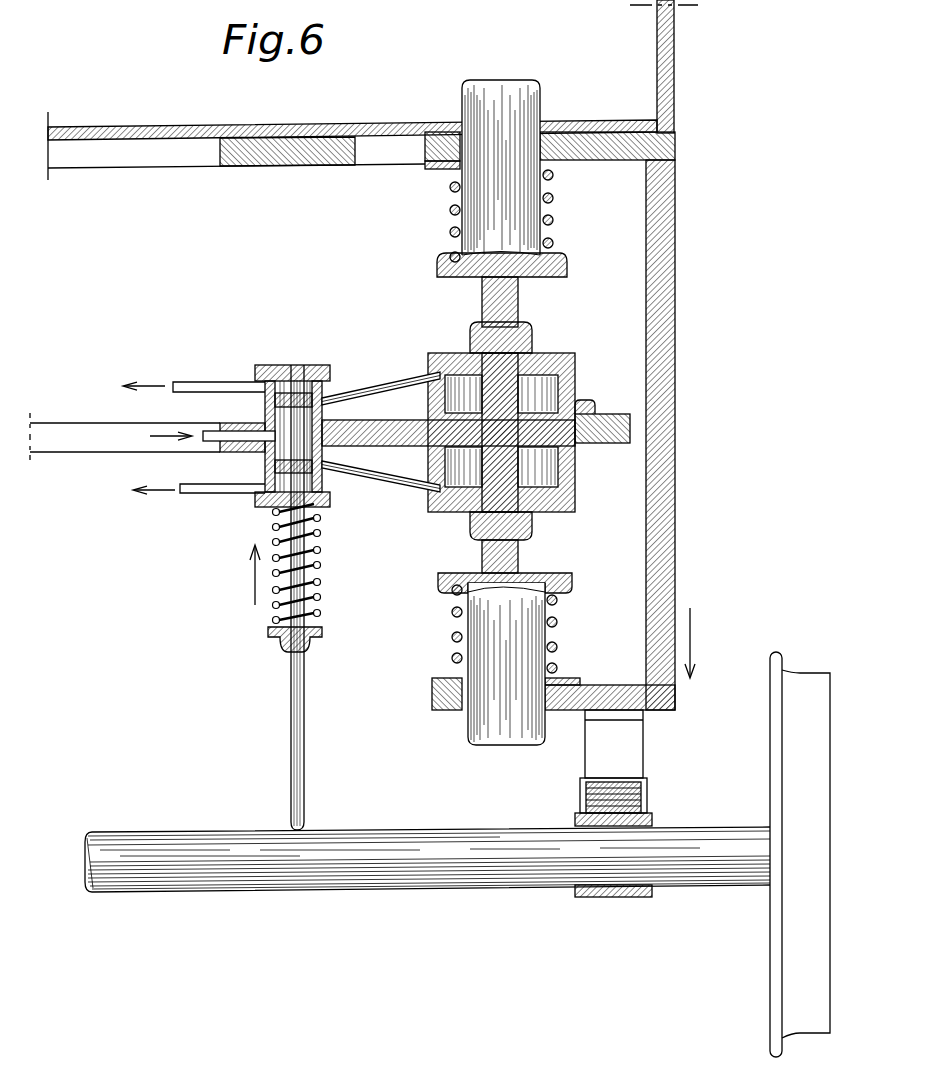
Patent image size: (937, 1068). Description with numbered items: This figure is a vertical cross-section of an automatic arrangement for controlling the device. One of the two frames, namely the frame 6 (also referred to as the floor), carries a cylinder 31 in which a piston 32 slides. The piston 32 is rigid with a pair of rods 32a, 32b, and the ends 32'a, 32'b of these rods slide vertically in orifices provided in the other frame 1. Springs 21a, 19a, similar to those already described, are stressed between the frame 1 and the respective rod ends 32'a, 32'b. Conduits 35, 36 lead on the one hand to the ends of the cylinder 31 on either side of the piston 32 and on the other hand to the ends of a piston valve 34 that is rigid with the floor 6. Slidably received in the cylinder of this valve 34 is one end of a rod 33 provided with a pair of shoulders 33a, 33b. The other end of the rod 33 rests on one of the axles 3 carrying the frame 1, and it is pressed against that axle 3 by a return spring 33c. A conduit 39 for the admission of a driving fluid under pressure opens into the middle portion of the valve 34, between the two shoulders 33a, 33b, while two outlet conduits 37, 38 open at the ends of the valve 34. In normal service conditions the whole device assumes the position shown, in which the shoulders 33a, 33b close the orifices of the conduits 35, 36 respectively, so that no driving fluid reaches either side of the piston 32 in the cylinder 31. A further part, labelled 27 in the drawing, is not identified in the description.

The frame 1 is at (96, 158).
The axle 3 is at (690, 840).
The frame (floor) 6 is at (56, 436).
The spring 19a is at (452, 635).
The spring 21a is at (555, 220).
The housing wall 27 is at (670, 543).
The cylinder 31 is at (560, 366).
The piston 32 is at (476, 432).
The rod 32a is at (500, 318).
The rod 32b is at (512, 556).
The rod end 32'a is at (526, 167).
The rod end 32'b is at (506, 686).
The rod 33 is at (303, 716).
The shoulder 33a is at (293, 400).
The shoulder 33b is at (315, 476).
The return spring 33c is at (320, 562).
The piston valve 34 is at (322, 375).
The conduit 35 is at (385, 382).
The conduit 36 is at (406, 486).
The outlet conduit 37 is at (200, 384).
The outlet conduit 38 is at (232, 494).
The admission conduit 39 is at (214, 446).